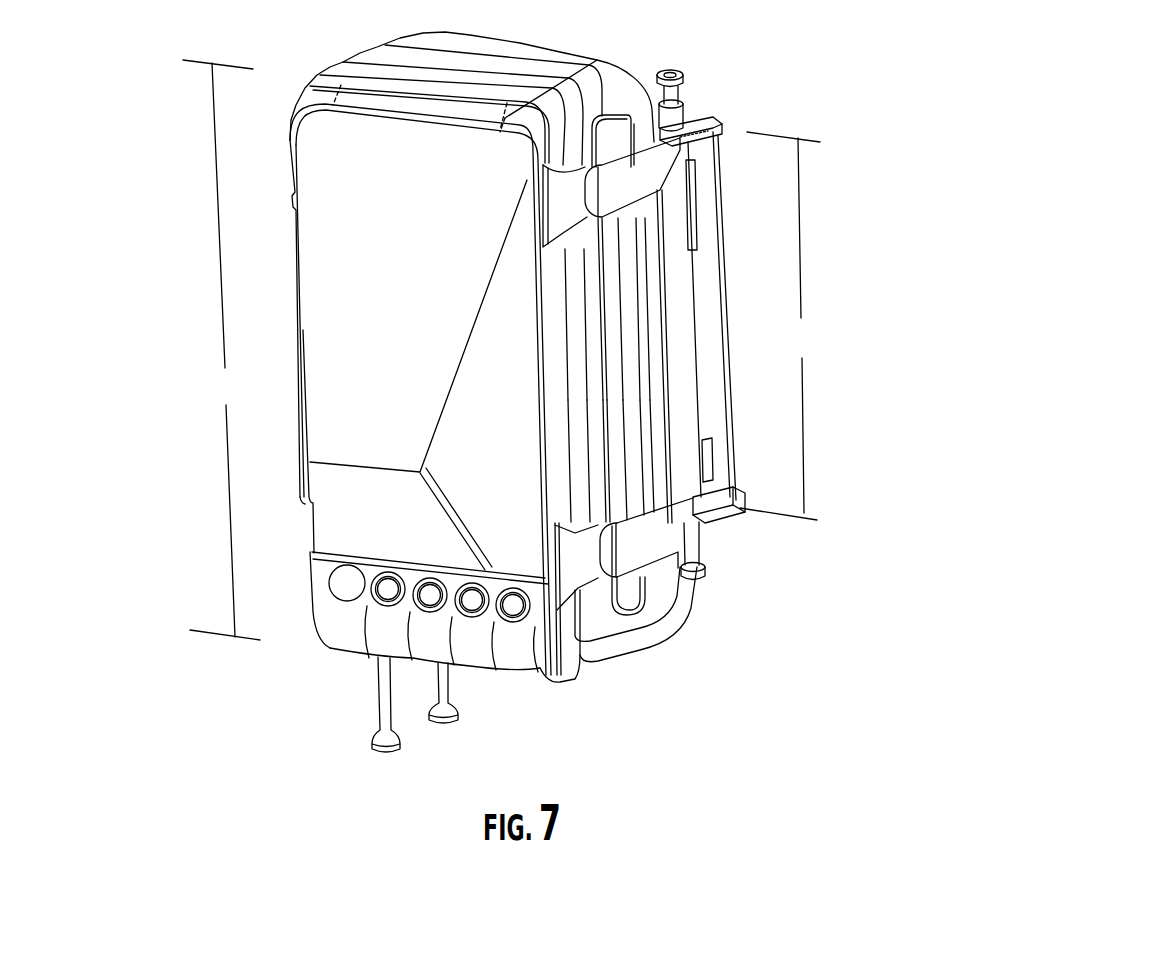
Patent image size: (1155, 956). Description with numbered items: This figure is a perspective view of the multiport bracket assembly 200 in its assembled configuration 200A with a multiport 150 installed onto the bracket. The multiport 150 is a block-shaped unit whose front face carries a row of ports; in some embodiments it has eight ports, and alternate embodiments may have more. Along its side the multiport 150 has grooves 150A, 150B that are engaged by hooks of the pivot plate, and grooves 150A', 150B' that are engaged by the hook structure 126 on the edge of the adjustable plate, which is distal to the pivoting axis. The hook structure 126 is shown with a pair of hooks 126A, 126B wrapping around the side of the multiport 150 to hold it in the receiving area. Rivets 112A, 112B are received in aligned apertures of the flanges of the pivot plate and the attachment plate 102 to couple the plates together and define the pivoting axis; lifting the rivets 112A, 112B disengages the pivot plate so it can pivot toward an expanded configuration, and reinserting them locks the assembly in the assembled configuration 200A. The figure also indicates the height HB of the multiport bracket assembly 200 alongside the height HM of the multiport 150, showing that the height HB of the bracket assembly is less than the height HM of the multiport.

The multiport 150 is at (327, 257).
The groove 150A is at (440, 105).
The groove 150B is at (396, 634).
The groove 150A' is at (671, 304).
The groove 150B' is at (677, 447).
The hook structure 126 is at (675, 341).
The hook 126A is at (633, 178).
The hook 126B is at (632, 546).
The rivet 112A is at (677, 97).
The rivet 112B is at (702, 558).
The attachment plate 102 is at (706, 377).
The height of multiport HM is at (221, 350).
The height of multiport bracket assembly HB is at (780, 326).
The multiport bracket assembly 200 is at (933, 645).
The assembled configuration 200A is at (1025, 803).